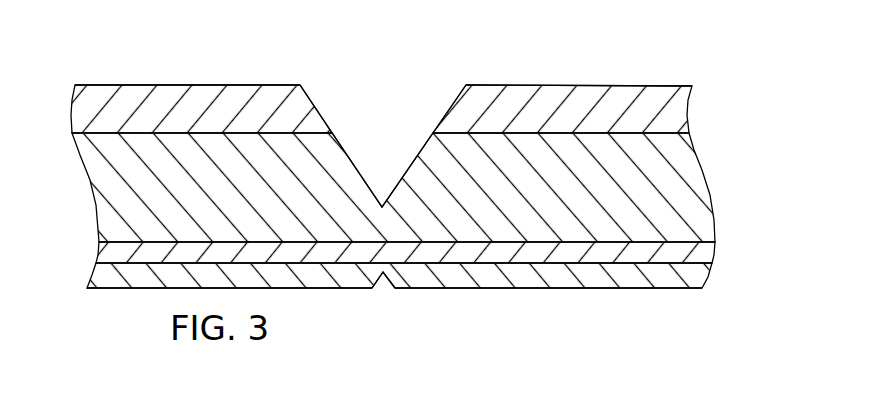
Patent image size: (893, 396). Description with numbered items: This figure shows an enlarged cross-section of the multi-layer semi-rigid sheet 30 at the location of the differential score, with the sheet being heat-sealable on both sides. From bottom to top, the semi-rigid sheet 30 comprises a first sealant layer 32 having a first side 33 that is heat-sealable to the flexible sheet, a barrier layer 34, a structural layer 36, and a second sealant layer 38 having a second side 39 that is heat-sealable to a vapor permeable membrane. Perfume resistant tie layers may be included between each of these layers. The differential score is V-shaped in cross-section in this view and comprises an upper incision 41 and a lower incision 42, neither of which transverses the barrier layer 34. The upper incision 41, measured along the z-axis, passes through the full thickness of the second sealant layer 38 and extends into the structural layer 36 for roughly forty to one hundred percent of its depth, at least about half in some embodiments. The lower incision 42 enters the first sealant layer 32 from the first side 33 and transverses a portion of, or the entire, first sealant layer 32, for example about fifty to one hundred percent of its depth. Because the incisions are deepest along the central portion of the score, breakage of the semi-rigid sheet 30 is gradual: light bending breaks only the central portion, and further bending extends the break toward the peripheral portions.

The semi-rigid sheet 30 is at (163, 44).
The first sealant layer 32 is at (693, 276).
The first side 33 is at (537, 298).
The barrier layer 34 is at (700, 255).
The structural layer 36 is at (672, 180).
The second sealant layer 38 is at (670, 111).
The second side 39 is at (568, 76).
The upper incision 41 is at (318, 114).
The lower incision 42 is at (382, 277).